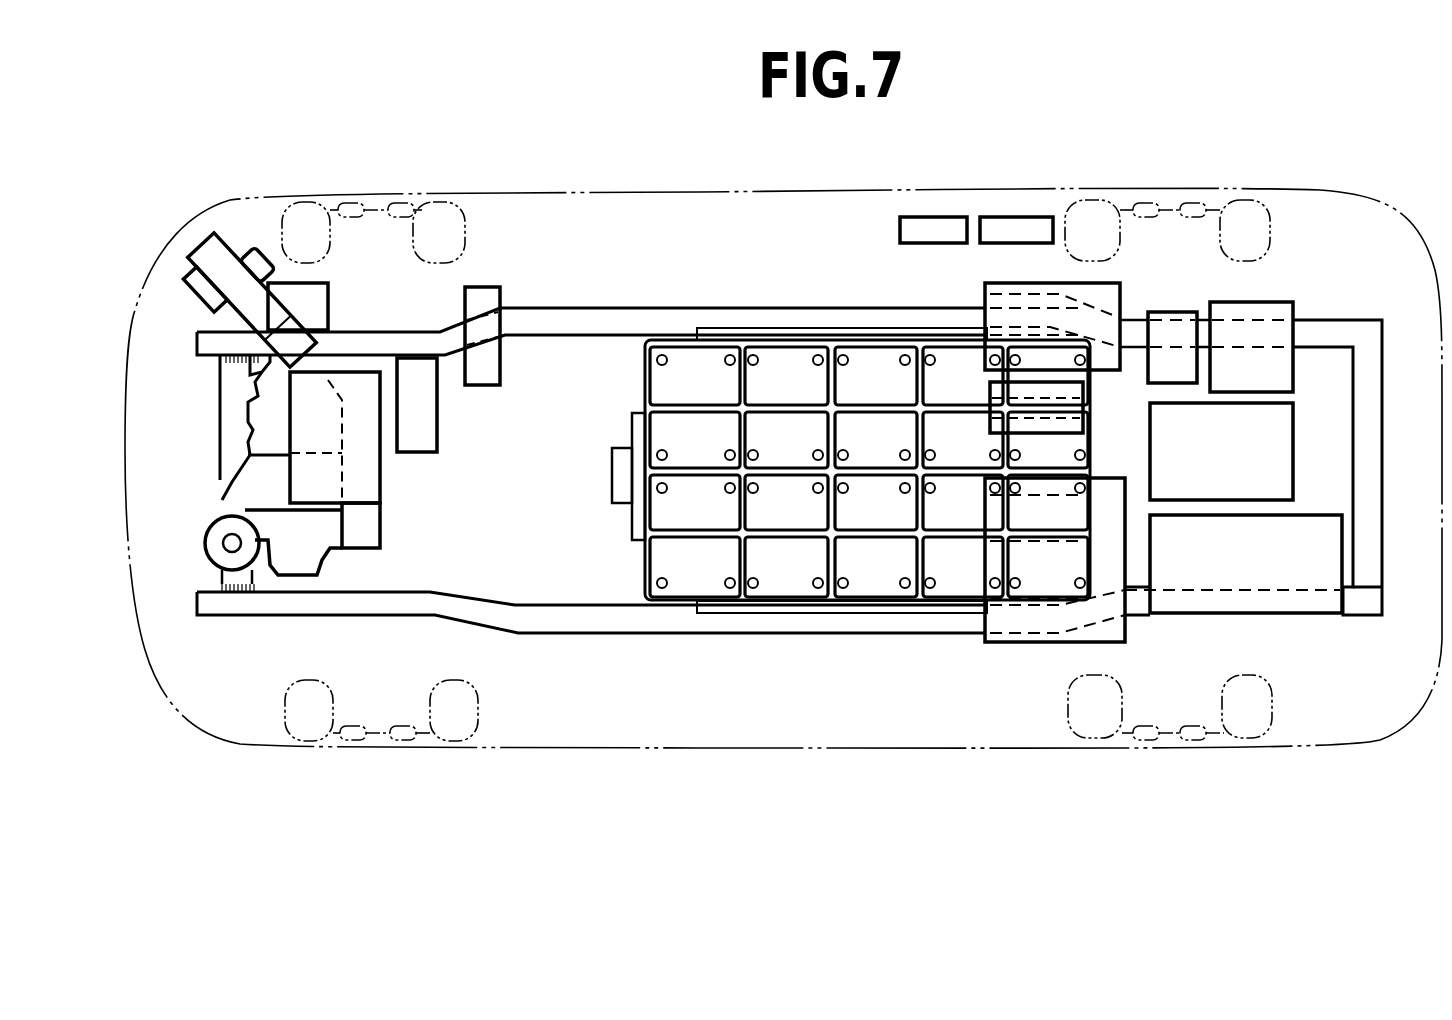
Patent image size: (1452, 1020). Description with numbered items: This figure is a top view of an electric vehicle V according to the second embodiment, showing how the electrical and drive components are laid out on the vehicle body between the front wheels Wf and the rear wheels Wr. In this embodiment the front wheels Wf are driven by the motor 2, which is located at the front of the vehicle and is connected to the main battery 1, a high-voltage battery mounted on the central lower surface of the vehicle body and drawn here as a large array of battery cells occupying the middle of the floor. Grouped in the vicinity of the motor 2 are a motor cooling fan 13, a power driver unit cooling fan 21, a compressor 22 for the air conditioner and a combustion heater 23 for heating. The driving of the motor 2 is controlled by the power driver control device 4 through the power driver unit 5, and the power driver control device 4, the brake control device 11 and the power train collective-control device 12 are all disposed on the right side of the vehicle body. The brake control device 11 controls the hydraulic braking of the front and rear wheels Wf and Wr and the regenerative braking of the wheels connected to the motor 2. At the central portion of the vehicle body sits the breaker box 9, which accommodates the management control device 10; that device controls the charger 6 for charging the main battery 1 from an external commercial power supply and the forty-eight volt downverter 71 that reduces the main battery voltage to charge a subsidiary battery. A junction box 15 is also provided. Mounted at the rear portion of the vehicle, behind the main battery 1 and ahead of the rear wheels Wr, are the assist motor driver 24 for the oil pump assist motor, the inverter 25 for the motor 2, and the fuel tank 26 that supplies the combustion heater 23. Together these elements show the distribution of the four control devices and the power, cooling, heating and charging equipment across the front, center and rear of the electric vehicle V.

The main battery 1 is at (862, 363).
The motor 2 is at (258, 410).
The power driver control device 4 is at (1015, 225).
The power driver unit 5 is at (372, 468).
The charger 6 is at (1282, 580).
The downverter 71 is at (1100, 308).
The breaker box 9 is at (1036, 407).
The management control device 10 is at (1036, 407).
The brake control device 11 is at (490, 300).
The power train collective-control device 12 is at (920, 225).
The motor cooling fan 13 is at (210, 250).
The junction box 15 is at (1283, 455).
The power driver unit cooling fan 21 is at (232, 530).
The compressor 22 is at (372, 527).
The combustion heater 23 is at (428, 432).
The assist motor driver 24 is at (1172, 320).
The inverter 25 is at (1268, 310).
The fuel tank 26 is at (1104, 485).
The electric vehicle V is at (656, 162).
The front wheels Wf is at (300, 203).
The rear wheels Wr is at (1250, 200).